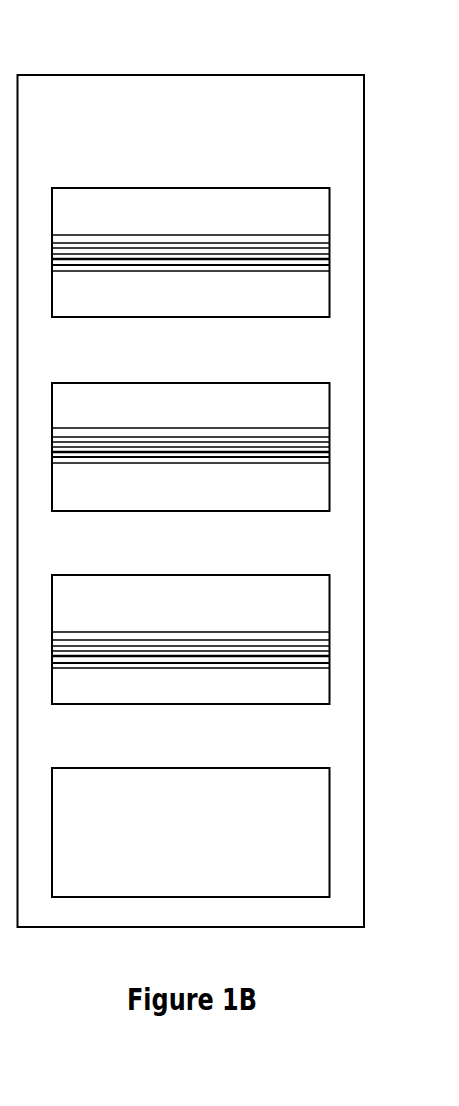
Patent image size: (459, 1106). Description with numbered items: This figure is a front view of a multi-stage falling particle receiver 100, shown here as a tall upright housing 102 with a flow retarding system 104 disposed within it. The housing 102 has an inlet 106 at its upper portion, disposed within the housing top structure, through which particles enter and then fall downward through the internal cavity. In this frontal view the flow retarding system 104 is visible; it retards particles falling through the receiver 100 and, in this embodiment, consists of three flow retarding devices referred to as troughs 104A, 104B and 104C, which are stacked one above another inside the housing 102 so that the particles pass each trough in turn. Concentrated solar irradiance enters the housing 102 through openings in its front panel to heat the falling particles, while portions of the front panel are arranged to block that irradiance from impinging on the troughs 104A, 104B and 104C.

The multi-stage falling particle receiver 100 is at (229, 472).
The housing 102 is at (364, 132).
The flow retarding system 104 is at (299, 422).
The trough 104A is at (302, 235).
The trough 104B is at (302, 465).
The trough 104C is at (302, 632).
The inlet 106 is at (111, 183).